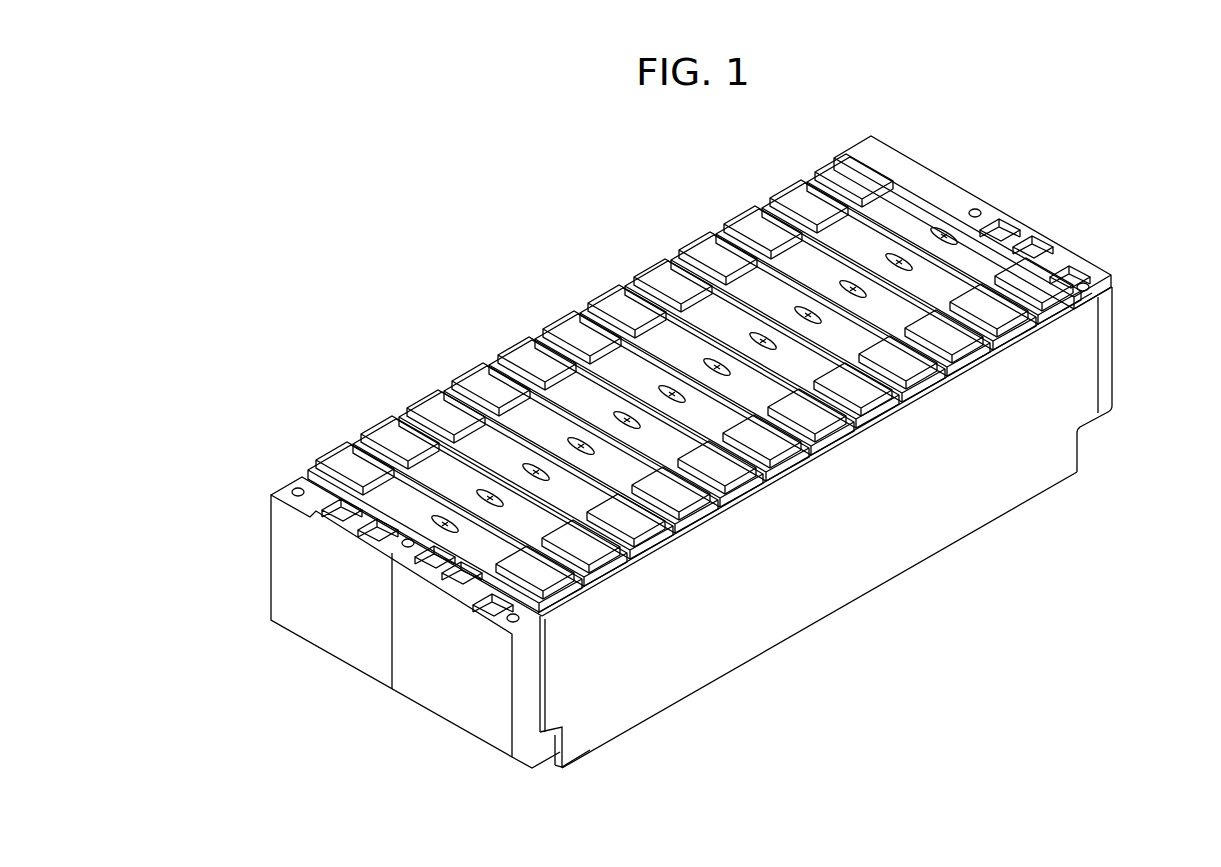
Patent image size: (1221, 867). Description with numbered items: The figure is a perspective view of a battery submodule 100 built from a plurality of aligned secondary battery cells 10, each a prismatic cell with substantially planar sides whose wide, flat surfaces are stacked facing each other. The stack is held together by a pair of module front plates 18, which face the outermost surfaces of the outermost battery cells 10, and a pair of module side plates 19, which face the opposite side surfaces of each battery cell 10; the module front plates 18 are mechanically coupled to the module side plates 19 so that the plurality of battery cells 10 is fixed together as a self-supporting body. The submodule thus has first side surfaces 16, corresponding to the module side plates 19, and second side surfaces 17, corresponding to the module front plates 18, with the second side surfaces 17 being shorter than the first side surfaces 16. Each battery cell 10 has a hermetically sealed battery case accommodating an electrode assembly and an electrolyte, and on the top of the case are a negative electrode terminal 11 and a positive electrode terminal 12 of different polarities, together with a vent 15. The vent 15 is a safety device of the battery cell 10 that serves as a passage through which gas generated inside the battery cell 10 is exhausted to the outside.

The battery submodule 100 is at (592, 256).
The secondary battery cell 10 is at (408, 505).
The negative electrode terminal 11 is at (840, 171).
The positive electrode terminal 12 is at (1040, 285).
The vent 15 is at (930, 224).
The first side surface 16 is at (812, 527).
The module side plate 19 is at (897, 562).
The second side surface 17 is at (702, 446).
The module front plate 18 is at (282, 494).